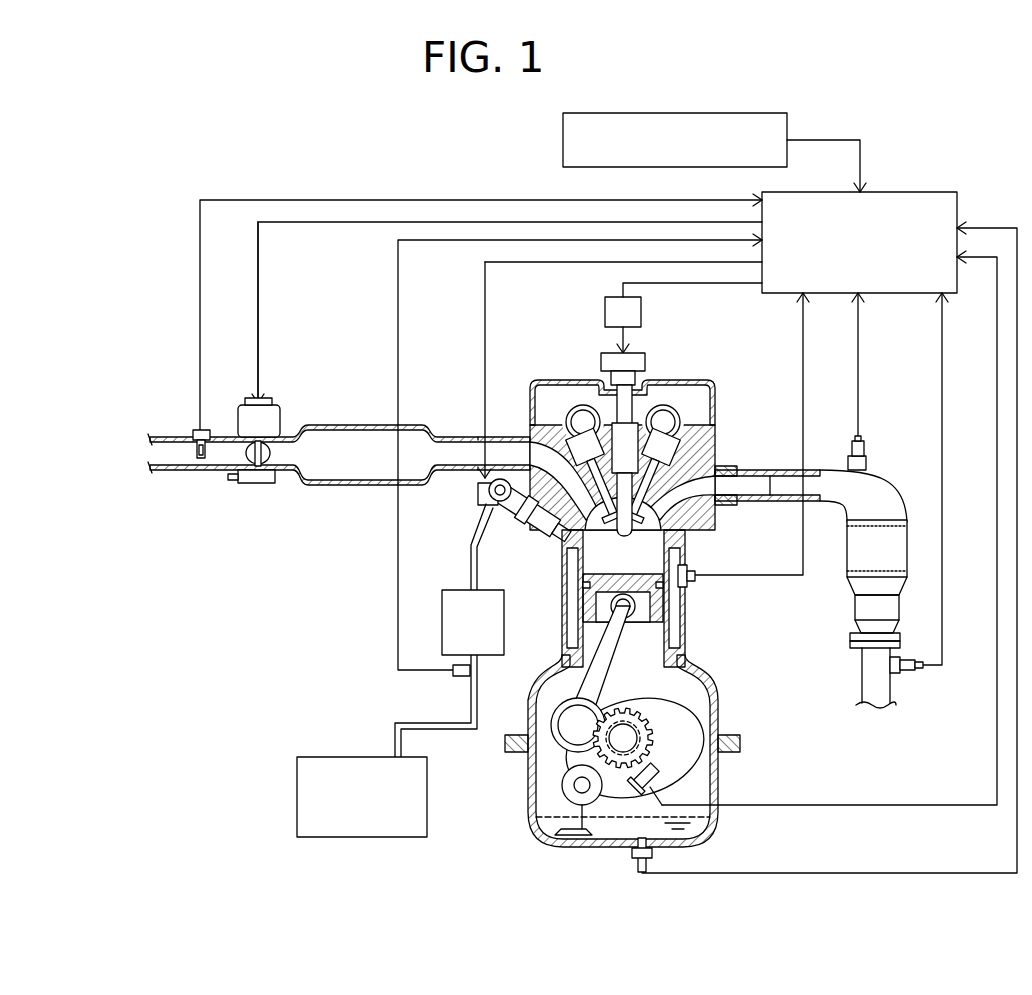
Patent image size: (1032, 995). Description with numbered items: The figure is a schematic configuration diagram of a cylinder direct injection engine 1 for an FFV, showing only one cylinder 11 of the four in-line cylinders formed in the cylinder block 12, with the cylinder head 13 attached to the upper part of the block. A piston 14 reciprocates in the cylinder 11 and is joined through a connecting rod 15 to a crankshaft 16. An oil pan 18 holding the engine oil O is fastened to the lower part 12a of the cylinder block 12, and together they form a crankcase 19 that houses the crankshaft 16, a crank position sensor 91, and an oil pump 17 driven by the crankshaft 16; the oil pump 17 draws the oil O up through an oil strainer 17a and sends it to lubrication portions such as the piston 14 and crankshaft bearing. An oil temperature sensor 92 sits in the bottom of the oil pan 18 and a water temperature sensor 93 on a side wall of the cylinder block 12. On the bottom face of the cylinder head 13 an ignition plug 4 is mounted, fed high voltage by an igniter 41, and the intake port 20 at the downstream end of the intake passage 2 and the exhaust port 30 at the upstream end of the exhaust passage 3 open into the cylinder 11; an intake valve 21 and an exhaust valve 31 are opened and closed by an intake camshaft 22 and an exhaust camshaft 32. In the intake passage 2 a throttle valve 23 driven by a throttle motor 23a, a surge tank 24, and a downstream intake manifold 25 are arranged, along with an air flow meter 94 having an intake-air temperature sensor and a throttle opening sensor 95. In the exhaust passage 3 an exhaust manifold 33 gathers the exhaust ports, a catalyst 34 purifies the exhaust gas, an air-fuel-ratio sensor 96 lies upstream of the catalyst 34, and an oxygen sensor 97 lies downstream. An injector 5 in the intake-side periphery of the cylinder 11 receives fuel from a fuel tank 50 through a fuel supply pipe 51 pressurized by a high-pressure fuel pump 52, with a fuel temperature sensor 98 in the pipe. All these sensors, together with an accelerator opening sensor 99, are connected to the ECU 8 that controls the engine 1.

The engine 1 is at (493, 194).
The intake passage 2 is at (447, 472).
The exhaust passage 3 is at (771, 481).
The ignition plug 4 is at (588, 547).
The injector 5 is at (522, 516).
The ECU 8 is at (958, 208).
The cylinder 11 is at (690, 556).
The cylinder block 12 is at (686, 632).
The lower part of the cylinder block 12a is at (718, 711).
The cylinder head 13 is at (713, 395).
The piston 14 is at (588, 590).
The connecting rod 15 is at (587, 654).
The crankshaft 16 is at (566, 745).
The oil pump 17 is at (562, 790).
The oil strainer 17a is at (558, 831).
The oil pan 18 is at (722, 762).
The crankcase 19 is at (803, 715).
The intake port 20 is at (518, 418).
The intake valve 21 is at (570, 407).
The intake camshaft 22 is at (592, 400).
The throttle valve 23 is at (275, 466).
The throttle motor 23a is at (270, 422).
The surge tank 24 is at (365, 486).
The intake manifold 25 is at (480, 438).
The exhaust port 30 is at (718, 463).
The exhaust valve 31 is at (685, 408).
The exhaust camshaft 32 is at (657, 398).
The exhaust manifold 33 is at (758, 504).
The catalyst 34 is at (848, 554).
The igniter 41 is at (641, 312).
The fuel tank 50 is at (297, 800).
The fuel supply pipe 51 is at (471, 556).
The high-pressure fuel pump 52 is at (442, 620).
The crank position sensor 91 is at (704, 784).
The oil temperature sensor 92 is at (633, 863).
The water temperature sensor 93 is at (694, 582).
The air flow meter 94 is at (200, 430).
The throttle opening sensor 95 is at (251, 484).
The air-fuel-ratio sensor 96 is at (864, 452).
The oxygen sensor 97 is at (906, 678).
The fuel temperature sensor 98 is at (458, 678).
The accelerator opening sensor 99 is at (563, 137).
The engine oil O is at (690, 832).